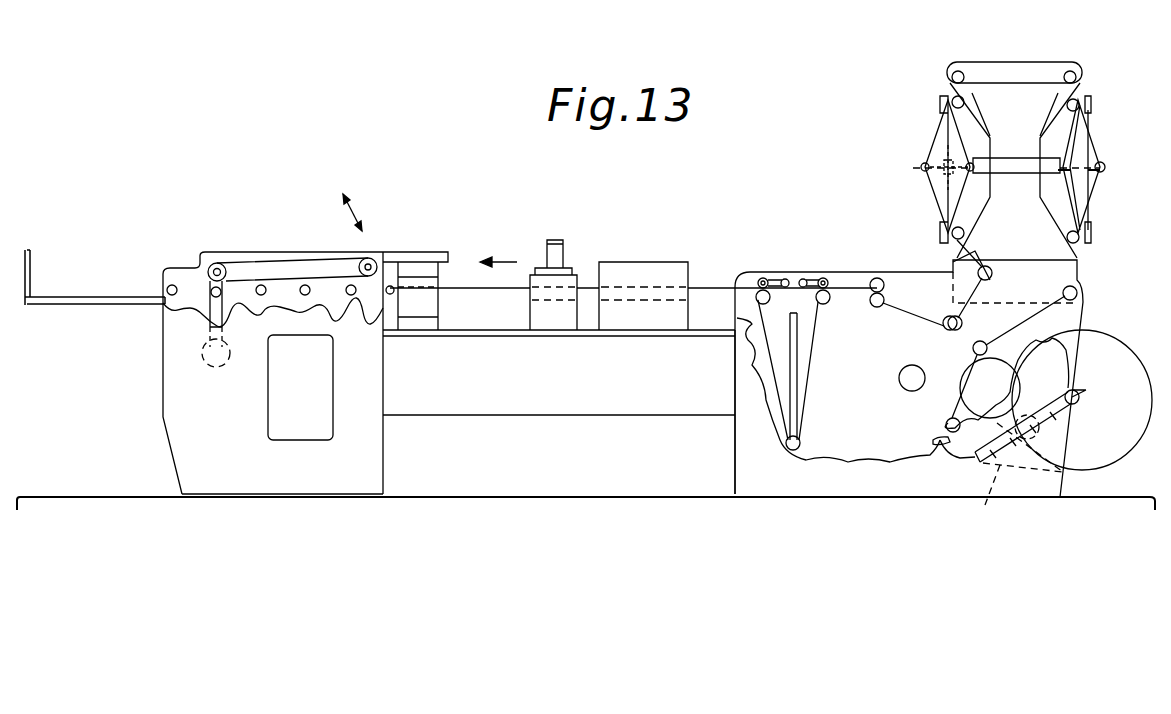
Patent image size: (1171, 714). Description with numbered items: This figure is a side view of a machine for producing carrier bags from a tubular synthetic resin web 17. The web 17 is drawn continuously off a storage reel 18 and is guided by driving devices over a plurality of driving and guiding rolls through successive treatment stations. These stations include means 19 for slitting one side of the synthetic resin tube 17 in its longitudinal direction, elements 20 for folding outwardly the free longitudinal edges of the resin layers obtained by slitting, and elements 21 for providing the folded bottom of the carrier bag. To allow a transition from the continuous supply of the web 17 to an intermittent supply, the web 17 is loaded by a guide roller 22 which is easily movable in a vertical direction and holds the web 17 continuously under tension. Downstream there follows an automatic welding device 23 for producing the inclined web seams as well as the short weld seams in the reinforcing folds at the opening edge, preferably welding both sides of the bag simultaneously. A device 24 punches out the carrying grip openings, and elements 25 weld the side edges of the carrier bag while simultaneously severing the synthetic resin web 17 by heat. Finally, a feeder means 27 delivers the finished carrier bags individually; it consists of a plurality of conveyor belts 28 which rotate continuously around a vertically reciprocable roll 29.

The tubular synthetic resin web 17 is at (1020, 64).
The storage reel 18 is at (1090, 338).
The slitting means 19 is at (936, 437).
The folding elements 20 is at (1101, 153).
The bottom folding elements 21 is at (940, 152).
The guide roller 22 is at (794, 450).
The automatic welding device 23 is at (652, 260).
The punching device 24 is at (569, 272).
The side edge welding elements 25 is at (449, 258).
The feeder means 27 is at (244, 262).
The conveyor belts 28 is at (281, 260).
The vertically reciprocable roll 29 is at (378, 259).